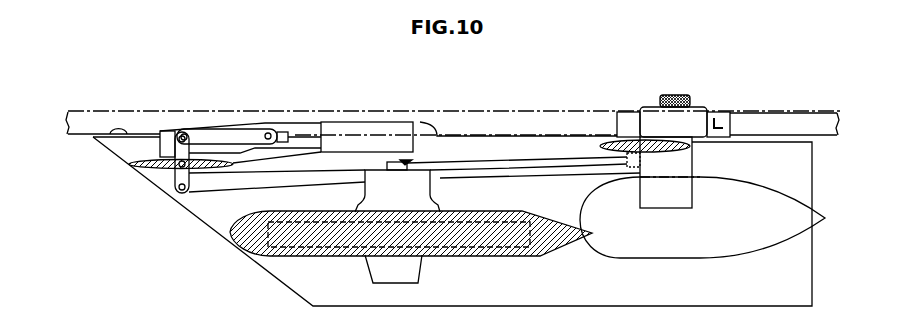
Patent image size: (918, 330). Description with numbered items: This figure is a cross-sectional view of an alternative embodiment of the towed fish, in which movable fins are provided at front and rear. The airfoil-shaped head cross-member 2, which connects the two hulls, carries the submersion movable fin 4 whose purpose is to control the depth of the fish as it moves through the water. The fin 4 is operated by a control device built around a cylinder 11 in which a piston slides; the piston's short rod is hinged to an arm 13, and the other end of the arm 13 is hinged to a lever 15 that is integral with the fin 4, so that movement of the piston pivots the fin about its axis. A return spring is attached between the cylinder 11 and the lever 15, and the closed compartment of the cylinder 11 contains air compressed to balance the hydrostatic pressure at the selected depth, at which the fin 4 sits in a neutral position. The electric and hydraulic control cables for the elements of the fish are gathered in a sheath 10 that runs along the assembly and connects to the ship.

The sheath 10 is at (529, 118).
The cylinder 11 is at (367, 122).
The arm 13 is at (247, 129).
The lever 15 is at (185, 150).
The submersion movable fin 4 is at (212, 167).
The head cross-member 2 is at (140, 167).